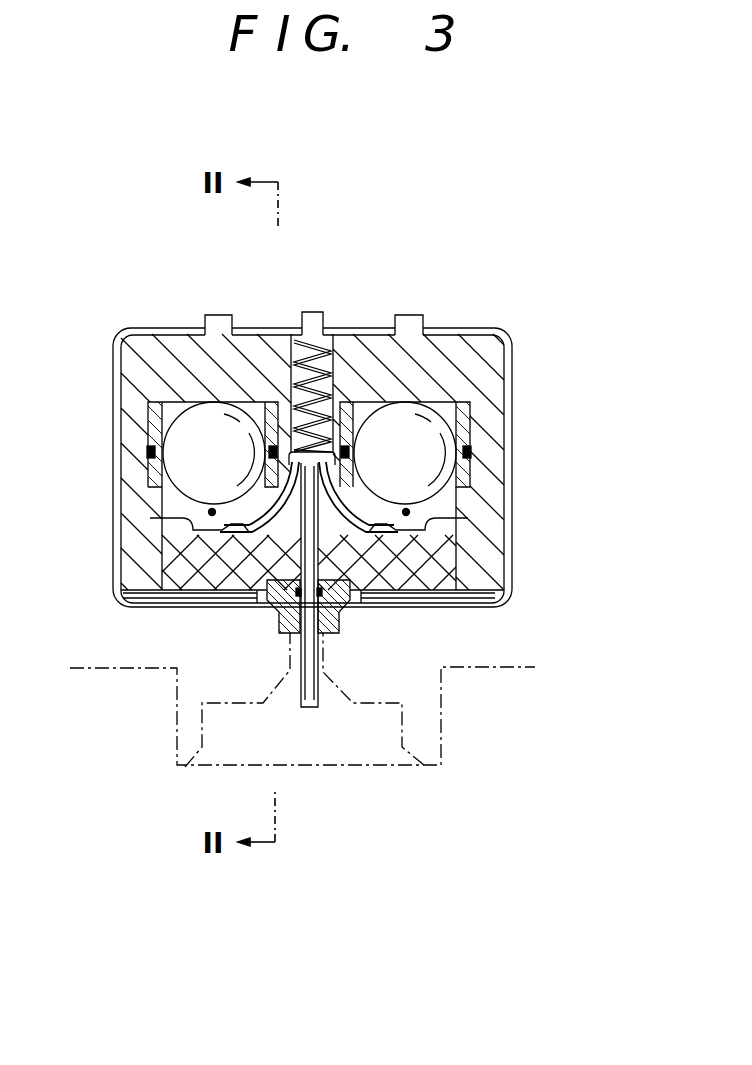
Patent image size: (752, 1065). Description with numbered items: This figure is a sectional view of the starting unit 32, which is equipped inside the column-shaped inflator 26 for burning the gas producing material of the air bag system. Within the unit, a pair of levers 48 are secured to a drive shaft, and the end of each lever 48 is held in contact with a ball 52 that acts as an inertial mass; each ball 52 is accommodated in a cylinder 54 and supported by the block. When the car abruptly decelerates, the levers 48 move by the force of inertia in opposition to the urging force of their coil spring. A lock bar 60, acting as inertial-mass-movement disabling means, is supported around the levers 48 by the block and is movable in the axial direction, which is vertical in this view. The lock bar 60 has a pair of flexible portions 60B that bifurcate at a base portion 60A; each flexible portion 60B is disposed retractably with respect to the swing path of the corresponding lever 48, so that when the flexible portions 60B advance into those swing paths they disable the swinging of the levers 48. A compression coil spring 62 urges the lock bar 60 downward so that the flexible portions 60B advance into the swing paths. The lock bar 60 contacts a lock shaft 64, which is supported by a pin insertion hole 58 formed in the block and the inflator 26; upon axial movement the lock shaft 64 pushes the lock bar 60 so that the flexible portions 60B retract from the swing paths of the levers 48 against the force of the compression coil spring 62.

The inflator 26 is at (76, 670).
The starting unit 32 is at (521, 327).
The lever 48 is at (210, 512).
The ball 52 is at (234, 425).
The cylinder 54 is at (153, 418).
The pin insertion hole 58 is at (313, 547).
The lock bar 60 is at (266, 505).
The base portion 60A is at (350, 433).
The flexible portion 60B is at (221, 594).
The compression coil spring 62 is at (343, 340).
The lock shaft 64 is at (332, 631).